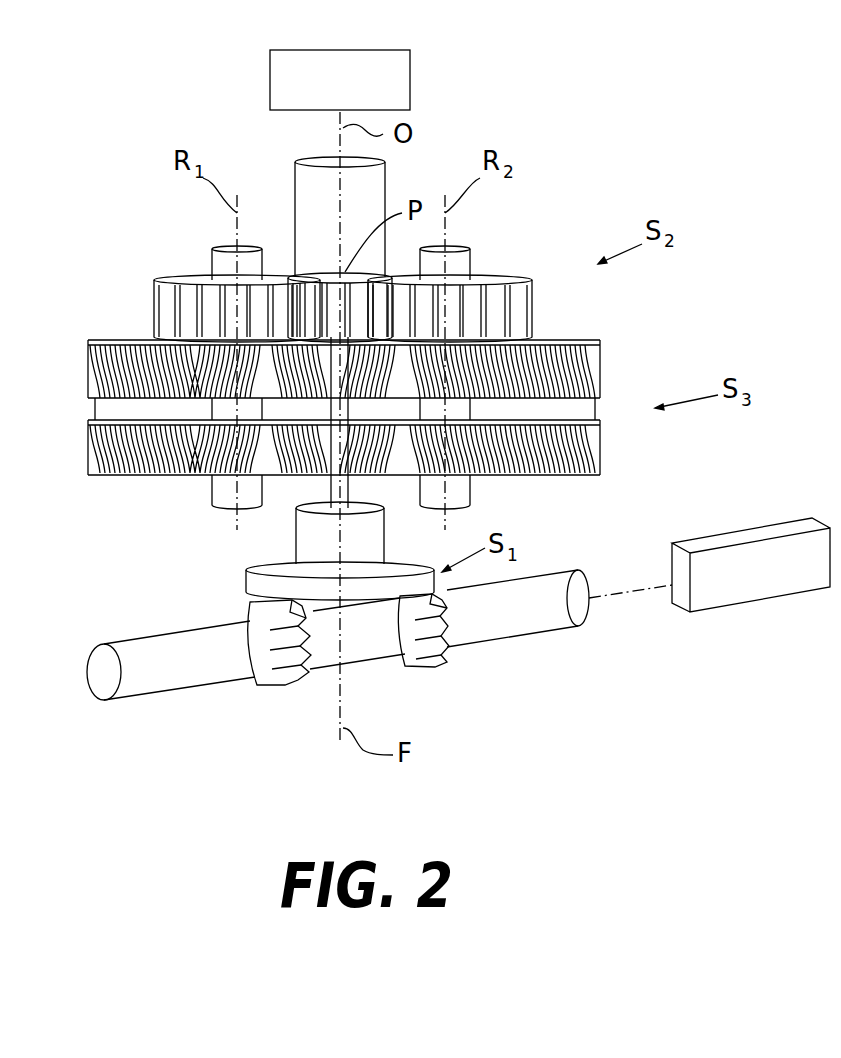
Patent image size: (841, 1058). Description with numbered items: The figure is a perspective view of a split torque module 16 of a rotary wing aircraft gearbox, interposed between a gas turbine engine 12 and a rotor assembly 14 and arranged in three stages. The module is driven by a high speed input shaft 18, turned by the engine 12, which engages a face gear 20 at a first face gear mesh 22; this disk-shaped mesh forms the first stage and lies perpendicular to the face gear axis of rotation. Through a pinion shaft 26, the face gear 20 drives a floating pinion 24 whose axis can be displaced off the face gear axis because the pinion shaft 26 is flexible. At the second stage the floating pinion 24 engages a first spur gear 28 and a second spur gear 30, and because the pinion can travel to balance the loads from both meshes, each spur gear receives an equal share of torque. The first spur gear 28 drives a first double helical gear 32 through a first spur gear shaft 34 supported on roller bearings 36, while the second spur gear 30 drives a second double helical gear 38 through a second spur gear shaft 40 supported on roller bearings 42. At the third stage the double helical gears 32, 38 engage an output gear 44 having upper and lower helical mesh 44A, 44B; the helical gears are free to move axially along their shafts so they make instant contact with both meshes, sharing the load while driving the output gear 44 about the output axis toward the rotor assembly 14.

The gas turbine engine 12 is at (763, 540).
The rotor assembly 14 is at (410, 68).
The split torque module 16 is at (622, 148).
The high speed input shaft 18 is at (552, 620).
The face gear 20 is at (234, 577).
The first face gear mesh 22 is at (421, 612).
The floating pinion 24 is at (330, 272).
The pinion shaft 26 is at (385, 481).
The first spur gear 28 is at (177, 298).
The second spur gear 30 is at (503, 298).
The first double helical gear 32 is at (170, 480).
The first spur gear shaft 34 is at (213, 492).
The roller bearings 36 is at (220, 263).
The second double helical gear 38 is at (517, 471).
The second spur gear shaft 40 is at (460, 490).
The roller bearings 42 is at (460, 267).
The output gear 44 is at (478, 452).
The upper helical mesh 44A is at (604, 336).
The lower helical mesh 44B is at (606, 440).